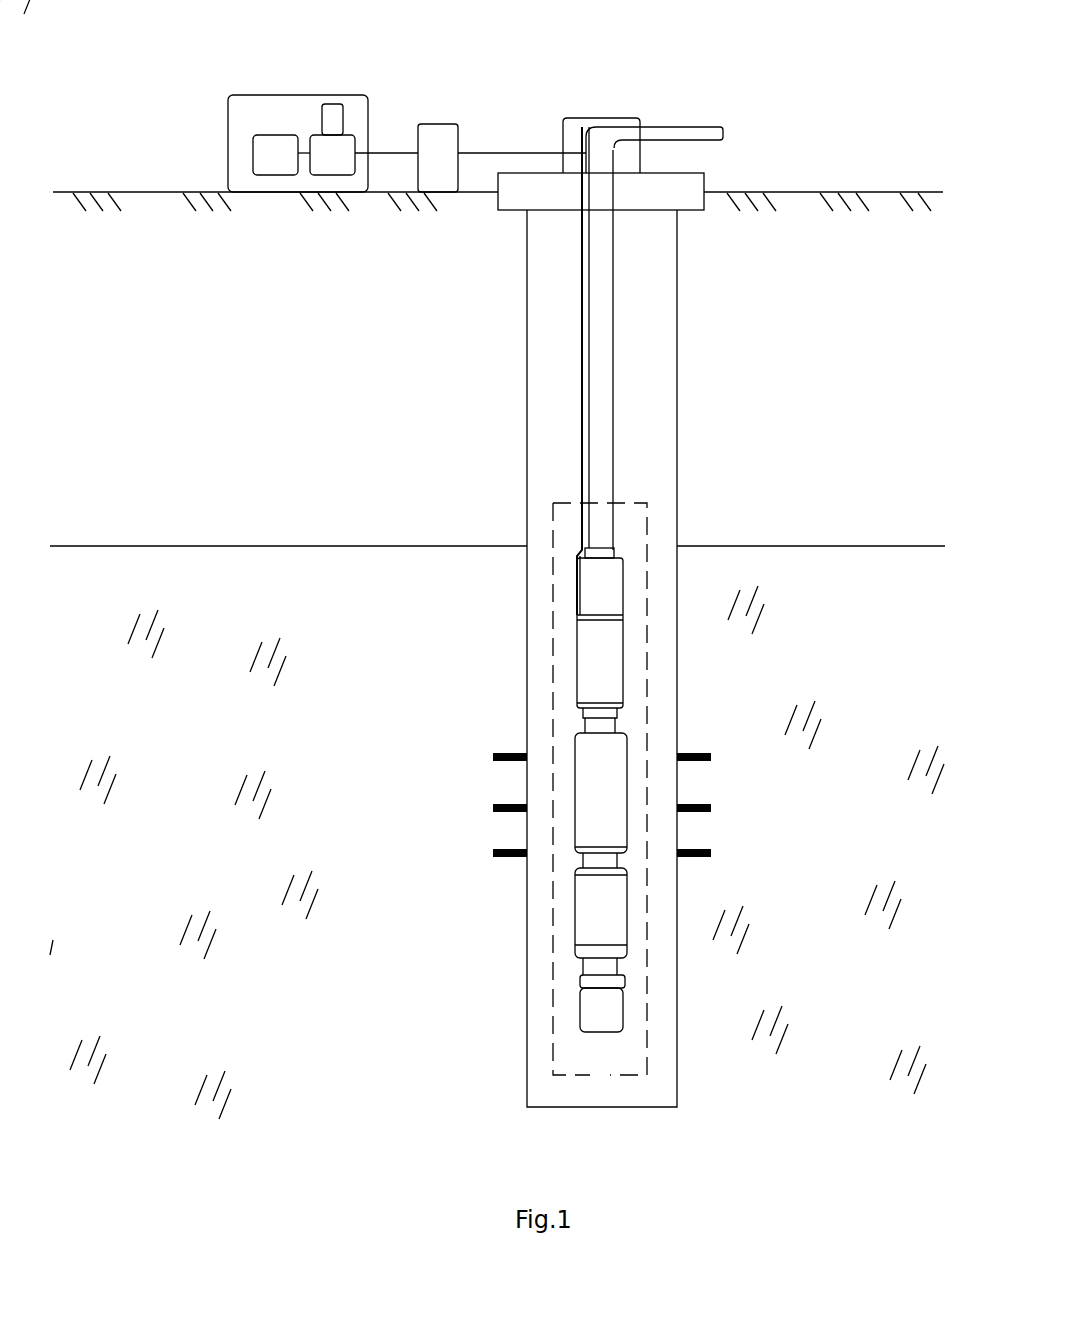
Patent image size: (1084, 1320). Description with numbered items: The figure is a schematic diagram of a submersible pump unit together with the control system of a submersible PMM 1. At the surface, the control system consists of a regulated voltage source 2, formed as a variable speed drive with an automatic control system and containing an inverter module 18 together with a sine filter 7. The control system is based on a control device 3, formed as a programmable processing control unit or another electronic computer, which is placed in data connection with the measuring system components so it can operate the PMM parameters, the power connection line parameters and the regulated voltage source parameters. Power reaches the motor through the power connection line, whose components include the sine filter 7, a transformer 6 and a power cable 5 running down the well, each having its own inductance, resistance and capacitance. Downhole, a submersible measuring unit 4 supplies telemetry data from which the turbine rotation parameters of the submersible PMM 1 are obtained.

The submersible PMM 1 is at (592, 771).
The regulated voltage source 2 is at (270, 112).
The control device 3 is at (343, 105).
The submersible measuring unit 4 is at (597, 1016).
The power cable 5 is at (580, 396).
The transformer 6 is at (458, 125).
The sine filter 7 is at (281, 155).
The inverter module 18 is at (332, 155).